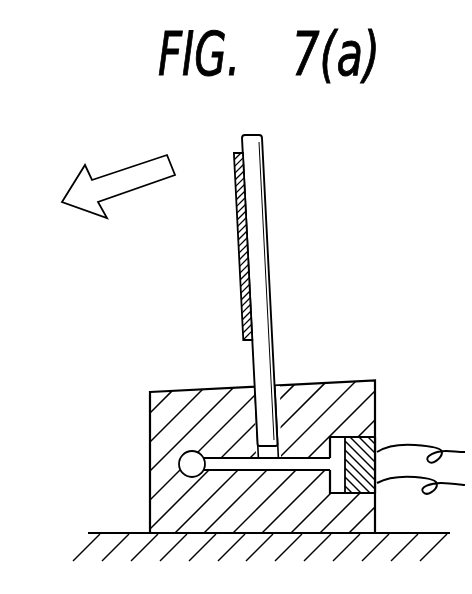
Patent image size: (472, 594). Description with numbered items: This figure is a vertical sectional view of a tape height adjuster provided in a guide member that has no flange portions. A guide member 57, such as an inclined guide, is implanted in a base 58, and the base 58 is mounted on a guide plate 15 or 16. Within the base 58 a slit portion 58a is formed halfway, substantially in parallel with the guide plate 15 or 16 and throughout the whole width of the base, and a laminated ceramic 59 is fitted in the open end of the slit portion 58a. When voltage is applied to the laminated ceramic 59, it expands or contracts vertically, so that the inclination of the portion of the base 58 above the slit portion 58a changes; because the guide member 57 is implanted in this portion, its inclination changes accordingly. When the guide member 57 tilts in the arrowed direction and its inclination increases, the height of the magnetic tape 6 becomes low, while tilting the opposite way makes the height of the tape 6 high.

The magnetic tape 6 is at (240, 263).
The guide member 57 is at (265, 232).
The base 58 is at (330, 382).
The slit portion 58a is at (233, 457).
The laminated ceramic 59 is at (377, 445).
The guide plate 15 is at (240, 517).
The guide plate 16 is at (102, 531).